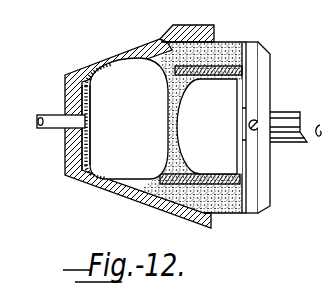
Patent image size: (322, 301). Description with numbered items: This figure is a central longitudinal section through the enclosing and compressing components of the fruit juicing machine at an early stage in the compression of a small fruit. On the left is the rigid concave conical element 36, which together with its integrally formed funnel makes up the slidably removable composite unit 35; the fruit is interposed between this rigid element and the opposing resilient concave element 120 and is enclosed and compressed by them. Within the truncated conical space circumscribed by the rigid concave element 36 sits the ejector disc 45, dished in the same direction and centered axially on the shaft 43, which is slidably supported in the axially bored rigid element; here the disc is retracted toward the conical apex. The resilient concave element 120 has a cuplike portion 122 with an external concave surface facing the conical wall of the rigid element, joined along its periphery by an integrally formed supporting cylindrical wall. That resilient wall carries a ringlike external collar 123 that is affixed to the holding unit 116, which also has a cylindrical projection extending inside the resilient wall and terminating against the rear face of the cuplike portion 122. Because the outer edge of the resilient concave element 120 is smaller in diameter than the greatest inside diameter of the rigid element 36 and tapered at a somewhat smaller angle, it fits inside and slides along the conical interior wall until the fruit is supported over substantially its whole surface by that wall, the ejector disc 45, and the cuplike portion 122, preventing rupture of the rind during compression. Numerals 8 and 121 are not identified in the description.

The outlet tube 8 is at (293, 143).
The composite unit 35 is at (60, 111).
The rigid concave conical element 36 is at (110, 58).
The shaft 43 is at (44, 130).
The ejector disc 45 is at (91, 136).
The holding unit 116 is at (271, 64).
The resilient concave element 120 is at (233, 41).
The chamber 121 is at (207, 126).
The cuplike portion 122 is at (170, 121).
The external collar 123 is at (218, 38).